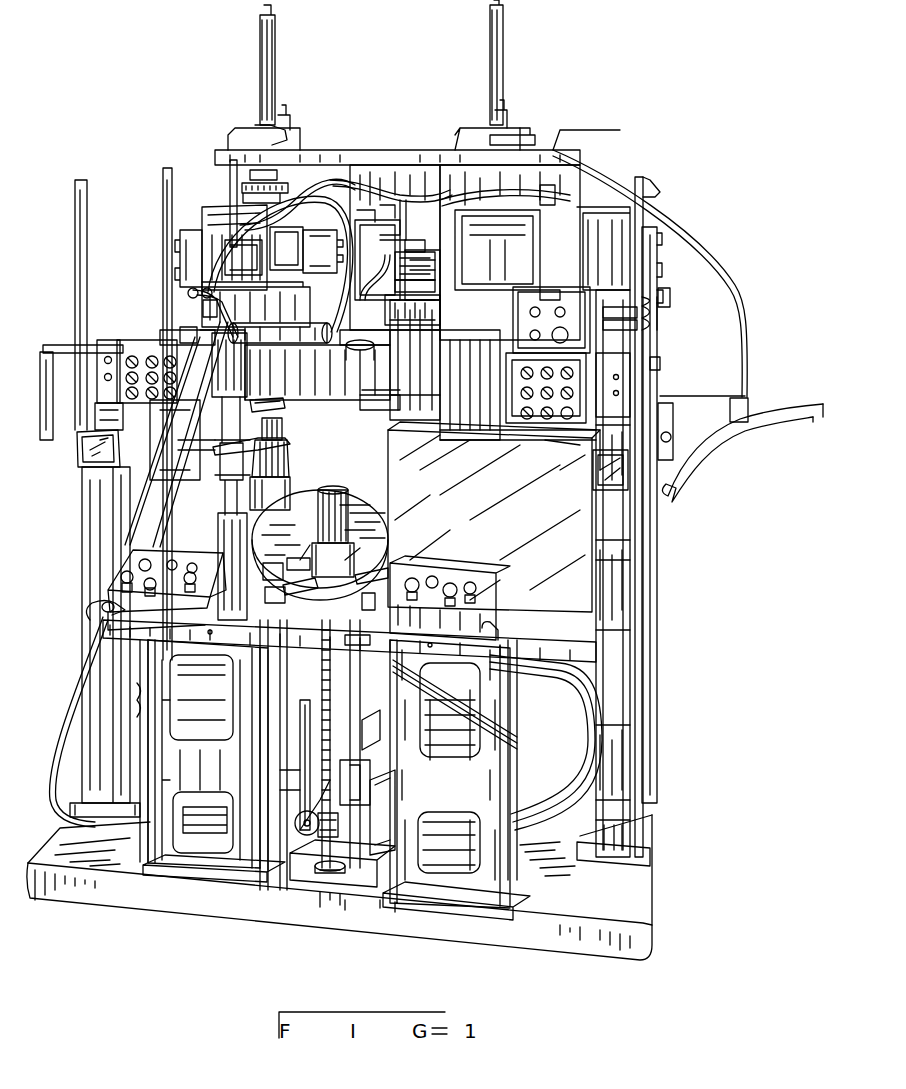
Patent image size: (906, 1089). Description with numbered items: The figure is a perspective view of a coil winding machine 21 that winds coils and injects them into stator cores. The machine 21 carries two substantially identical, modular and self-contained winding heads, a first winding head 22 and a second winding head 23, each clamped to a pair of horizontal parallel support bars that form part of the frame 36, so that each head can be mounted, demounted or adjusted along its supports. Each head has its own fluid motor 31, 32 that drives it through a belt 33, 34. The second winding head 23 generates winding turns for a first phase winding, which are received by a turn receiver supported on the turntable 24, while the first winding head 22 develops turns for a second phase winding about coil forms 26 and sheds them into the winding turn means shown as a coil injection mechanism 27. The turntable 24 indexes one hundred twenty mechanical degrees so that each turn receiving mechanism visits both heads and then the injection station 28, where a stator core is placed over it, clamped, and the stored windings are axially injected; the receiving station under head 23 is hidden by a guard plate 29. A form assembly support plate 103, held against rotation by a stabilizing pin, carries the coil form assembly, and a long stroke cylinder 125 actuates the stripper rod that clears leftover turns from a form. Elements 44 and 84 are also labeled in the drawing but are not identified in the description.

The coil winding machine 21 is at (180, 922).
The first winding head 22 is at (203, 212).
The second winding head 23 is at (572, 215).
The turntable 24 is at (385, 513).
The coil forms 26 is at (286, 428).
The coil injection mechanism 27 is at (290, 462).
The injection station 28 is at (363, 550).
The guard plate 29 is at (560, 528).
The fluid motor 31 is at (386, 335).
The fluid motor 32 is at (435, 296).
The belt 33 is at (418, 313).
The belt 34 is at (352, 348).
The frame 36 is at (615, 564).
The lever arm 44 is at (292, 444).
The control switch box 84 is at (100, 405).
The form assembly support plate 103 is at (284, 407).
The long stroke cylinder 125 is at (276, 46).